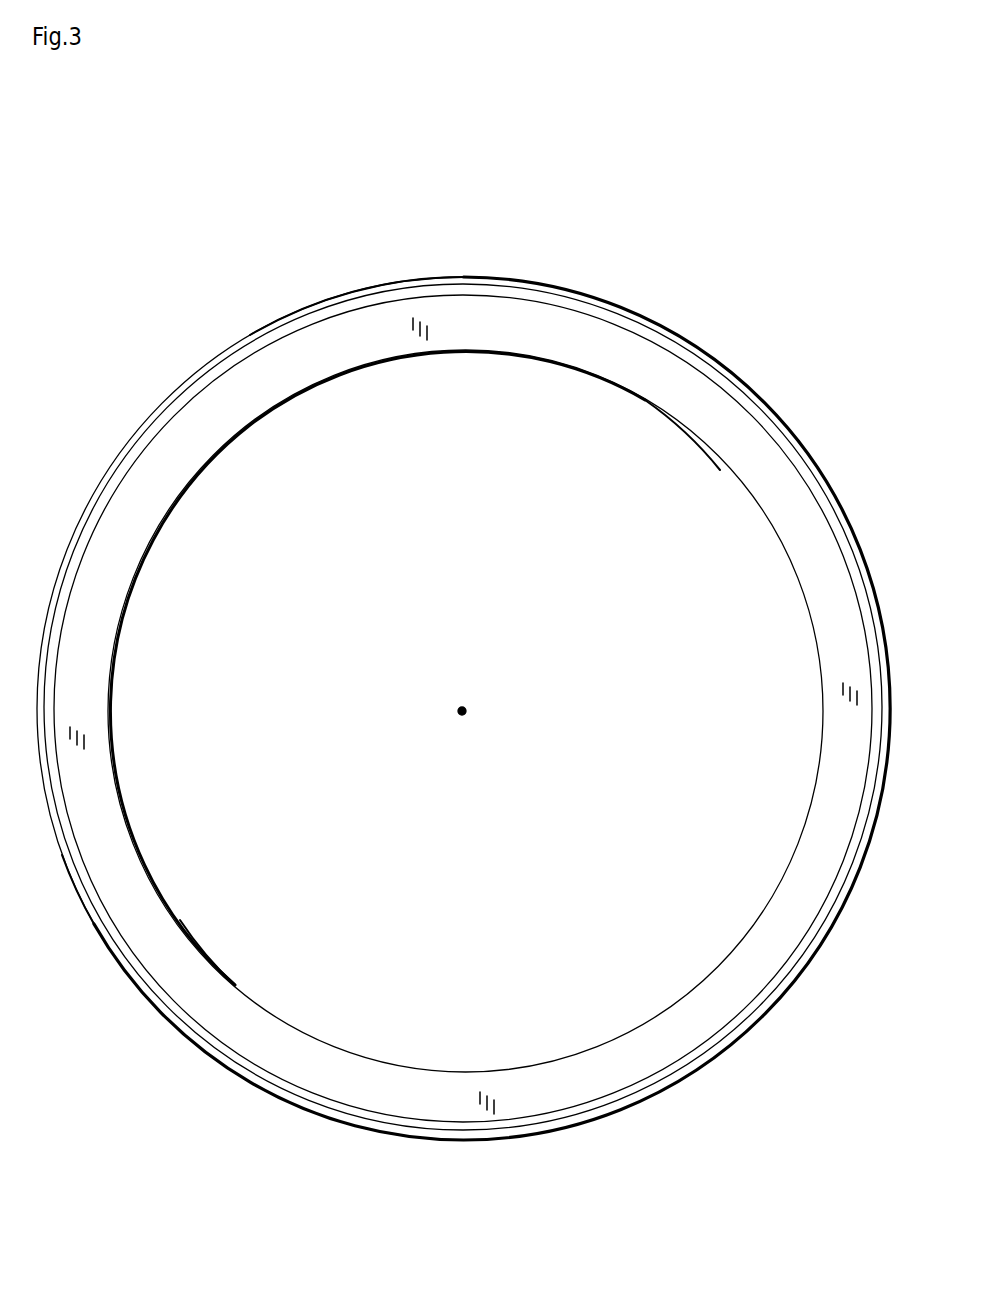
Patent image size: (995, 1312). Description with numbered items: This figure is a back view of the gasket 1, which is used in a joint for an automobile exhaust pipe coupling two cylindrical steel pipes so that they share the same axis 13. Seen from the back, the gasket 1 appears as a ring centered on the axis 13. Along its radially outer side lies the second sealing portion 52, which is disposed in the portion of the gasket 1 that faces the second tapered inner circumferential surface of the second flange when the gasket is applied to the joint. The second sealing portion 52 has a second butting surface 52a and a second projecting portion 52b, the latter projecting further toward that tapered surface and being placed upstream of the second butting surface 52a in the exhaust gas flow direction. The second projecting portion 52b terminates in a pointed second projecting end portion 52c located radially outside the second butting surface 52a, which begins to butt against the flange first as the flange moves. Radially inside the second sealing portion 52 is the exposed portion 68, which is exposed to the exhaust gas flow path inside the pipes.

The gasket 1 is at (690, 296).
The axis 13 is at (462, 706).
The second sealing portion 52 is at (463, 747).
The second butting surface 52a is at (236, 1060).
The second projecting portion 52b is at (557, 1138).
The second projecting end portion 52c is at (462, 1145).
The exposed portion 68 is at (236, 416).